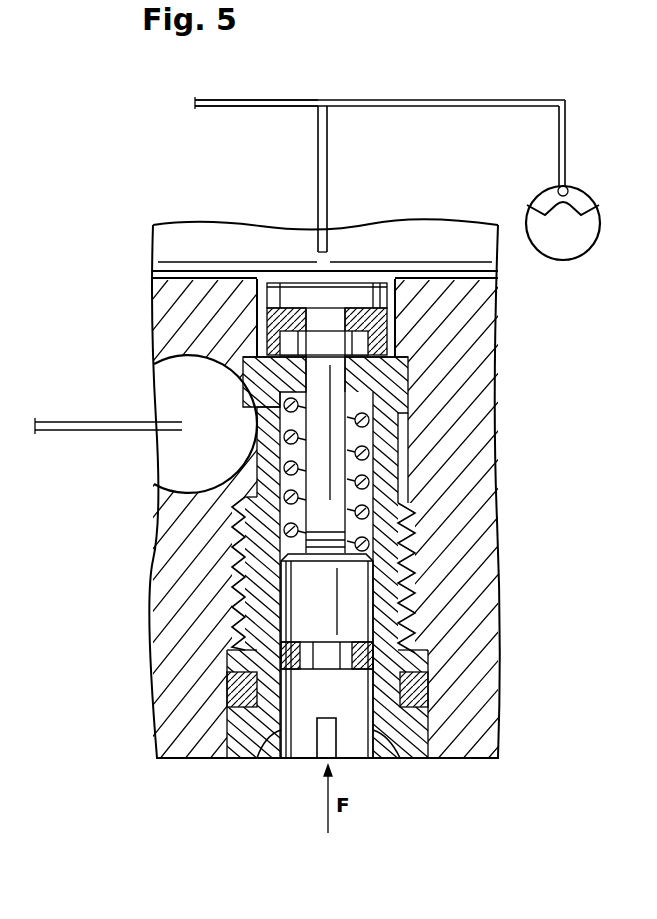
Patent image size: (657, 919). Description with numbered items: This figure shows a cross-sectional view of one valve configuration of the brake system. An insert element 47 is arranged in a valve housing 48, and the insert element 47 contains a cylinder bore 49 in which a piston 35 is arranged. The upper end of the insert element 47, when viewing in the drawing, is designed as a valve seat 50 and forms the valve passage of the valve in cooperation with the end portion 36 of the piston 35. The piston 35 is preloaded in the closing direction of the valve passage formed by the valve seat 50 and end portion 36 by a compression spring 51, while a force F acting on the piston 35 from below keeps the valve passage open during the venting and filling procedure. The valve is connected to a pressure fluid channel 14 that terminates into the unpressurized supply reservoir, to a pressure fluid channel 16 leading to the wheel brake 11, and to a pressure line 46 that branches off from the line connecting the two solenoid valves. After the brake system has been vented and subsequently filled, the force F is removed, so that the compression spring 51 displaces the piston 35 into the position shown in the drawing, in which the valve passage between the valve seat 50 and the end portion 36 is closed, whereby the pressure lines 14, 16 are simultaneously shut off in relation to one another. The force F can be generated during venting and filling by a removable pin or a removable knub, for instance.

The wheel brake 11 is at (565, 261).
The pressure fluid channel 14 is at (64, 433).
The pressure fluid channel 16 is at (443, 108).
The piston 35 is at (303, 730).
The end portion 36 is at (283, 296).
The pressure line 46 is at (237, 108).
The insert element 47 is at (390, 557).
The valve housing 48 is at (188, 597).
The cylinder bore 49 is at (368, 620).
The valve seat 50 is at (246, 395).
The compression spring 51 is at (365, 455).